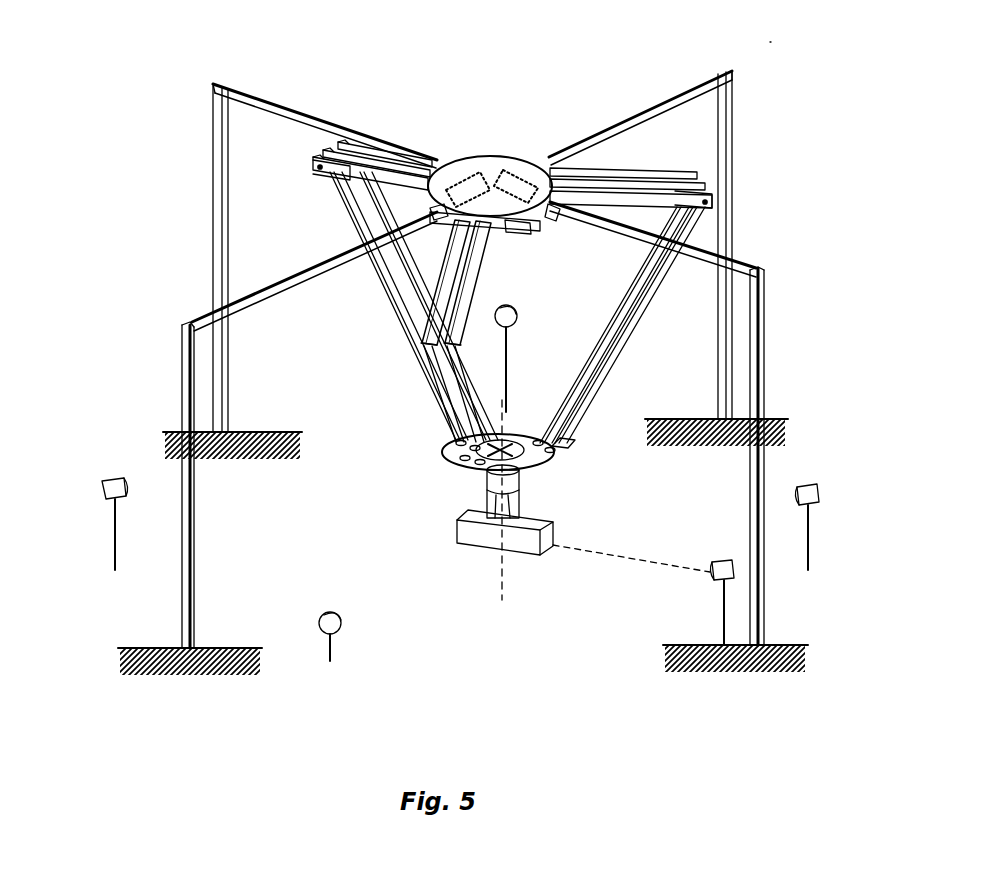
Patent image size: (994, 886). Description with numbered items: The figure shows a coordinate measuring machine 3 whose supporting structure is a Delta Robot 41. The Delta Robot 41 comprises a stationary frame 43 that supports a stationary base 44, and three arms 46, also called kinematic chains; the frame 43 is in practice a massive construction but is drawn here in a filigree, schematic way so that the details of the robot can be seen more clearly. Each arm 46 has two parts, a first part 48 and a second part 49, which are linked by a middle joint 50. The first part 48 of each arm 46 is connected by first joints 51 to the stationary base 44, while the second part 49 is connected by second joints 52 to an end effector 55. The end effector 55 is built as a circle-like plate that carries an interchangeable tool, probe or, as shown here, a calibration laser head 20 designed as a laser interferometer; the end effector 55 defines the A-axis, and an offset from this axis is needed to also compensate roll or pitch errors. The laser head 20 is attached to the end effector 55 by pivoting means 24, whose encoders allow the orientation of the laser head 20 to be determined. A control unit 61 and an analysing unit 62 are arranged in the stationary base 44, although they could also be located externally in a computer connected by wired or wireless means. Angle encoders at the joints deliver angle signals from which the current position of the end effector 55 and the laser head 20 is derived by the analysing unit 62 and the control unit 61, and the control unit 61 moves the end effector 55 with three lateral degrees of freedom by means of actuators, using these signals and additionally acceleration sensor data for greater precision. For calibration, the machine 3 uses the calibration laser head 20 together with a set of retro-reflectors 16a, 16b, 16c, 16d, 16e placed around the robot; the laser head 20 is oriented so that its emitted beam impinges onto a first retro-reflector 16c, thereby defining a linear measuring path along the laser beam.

The coordinate measuring machine 3 is at (772, 40).
The Delta Robot 41 is at (358, 381).
The stationary frame 43 is at (312, 104).
The stationary base 44 is at (490, 170).
The arms 46 is at (348, 216).
The first part 48 is at (650, 200).
The second part 49 is at (582, 420).
The middle joint 50 is at (712, 204).
The first joints 51 is at (528, 233).
The second joints 52 is at (553, 463).
The end effector 55 is at (458, 452).
The control unit 61 is at (462, 180).
The analysing unit 62 is at (519, 183).
The pivoting means 24 is at (490, 502).
The calibration laser head 20 is at (442, 526).
The A-axis A is at (500, 585).
The retro-reflector 16a is at (112, 480).
The retro-reflector 16b is at (327, 614).
The retro-reflector 16c is at (718, 582).
The retro-reflector 16d is at (814, 482).
The retro-reflector 16e is at (512, 312).